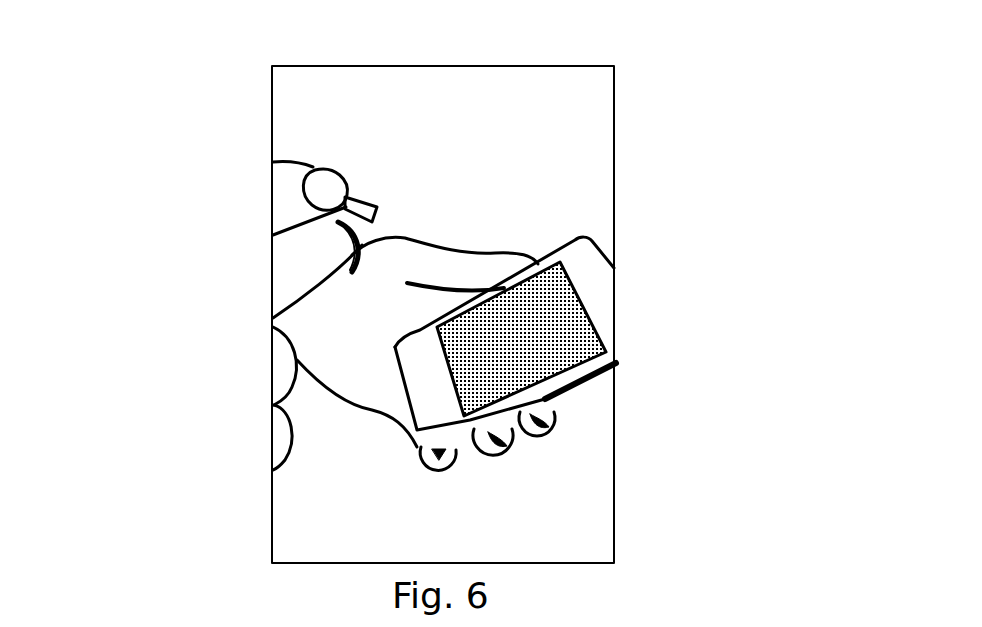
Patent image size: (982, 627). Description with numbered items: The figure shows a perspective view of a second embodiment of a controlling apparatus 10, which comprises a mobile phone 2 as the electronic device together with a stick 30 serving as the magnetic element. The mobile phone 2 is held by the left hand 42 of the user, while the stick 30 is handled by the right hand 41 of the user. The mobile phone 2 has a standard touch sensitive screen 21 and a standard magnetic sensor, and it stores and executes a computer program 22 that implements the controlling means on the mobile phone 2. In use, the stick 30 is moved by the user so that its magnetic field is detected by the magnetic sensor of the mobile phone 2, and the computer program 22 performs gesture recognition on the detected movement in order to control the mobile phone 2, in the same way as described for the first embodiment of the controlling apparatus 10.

The controlling apparatus 10 is at (595, 228).
The mobile phone 2 is at (620, 331).
The touch sensitive screen 21 is at (553, 353).
The computer program 22 is at (583, 387).
The stick 30 is at (318, 208).
The right hand 41 is at (308, 270).
The left hand 42 is at (363, 335).